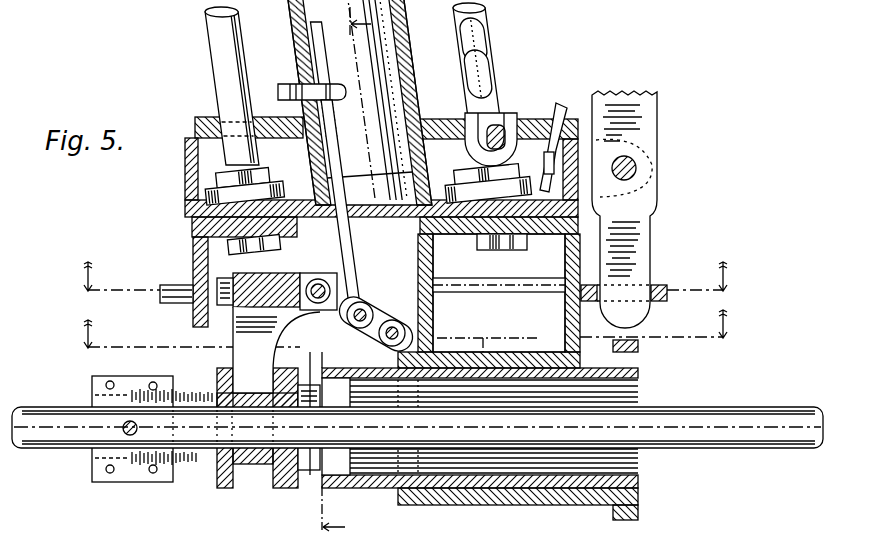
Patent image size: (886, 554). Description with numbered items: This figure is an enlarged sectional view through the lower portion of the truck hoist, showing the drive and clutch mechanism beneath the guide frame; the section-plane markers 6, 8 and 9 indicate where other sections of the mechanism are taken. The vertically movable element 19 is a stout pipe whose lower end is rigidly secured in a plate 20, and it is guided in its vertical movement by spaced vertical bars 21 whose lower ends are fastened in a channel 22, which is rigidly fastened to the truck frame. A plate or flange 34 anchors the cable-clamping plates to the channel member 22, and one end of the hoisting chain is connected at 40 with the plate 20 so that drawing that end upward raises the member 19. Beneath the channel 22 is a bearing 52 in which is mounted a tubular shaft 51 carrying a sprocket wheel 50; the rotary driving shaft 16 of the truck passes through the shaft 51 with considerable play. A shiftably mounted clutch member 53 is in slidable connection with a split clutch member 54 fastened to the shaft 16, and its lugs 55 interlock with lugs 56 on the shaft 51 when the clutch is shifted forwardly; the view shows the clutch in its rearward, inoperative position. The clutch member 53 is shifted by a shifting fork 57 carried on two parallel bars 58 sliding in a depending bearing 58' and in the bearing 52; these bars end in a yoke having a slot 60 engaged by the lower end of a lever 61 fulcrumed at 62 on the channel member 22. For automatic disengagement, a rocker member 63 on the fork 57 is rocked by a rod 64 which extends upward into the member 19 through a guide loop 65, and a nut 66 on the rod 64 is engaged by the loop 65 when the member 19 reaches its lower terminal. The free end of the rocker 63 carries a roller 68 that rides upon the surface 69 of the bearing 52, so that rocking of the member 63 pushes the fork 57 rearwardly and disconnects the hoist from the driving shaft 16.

The rotary driving shaft 16 is at (712, 442).
The vertically movable element 19 is at (410, 54).
The plate 20 is at (440, 121).
The bars 21 is at (214, 58).
The channel 22 is at (190, 197).
The plate or flange 34 is at (495, 56).
The chain connection 40 is at (512, 122).
The sprocket wheel 50 is at (637, 352).
The tubular shaft 51 is at (505, 490).
The bearing 52 is at (430, 322).
The clutch member 53 is at (256, 465).
The split clutch member 54 is at (138, 482).
The lugs 55 is at (306, 386).
The lugs 56 is at (338, 384).
The shifting fork 57 is at (240, 326).
The bars 58 is at (499, 263).
The depending bearing 58' is at (166, 308).
The slot 60 is at (654, 284).
The lever 61 is at (646, 222).
The fulcrum 62 is at (637, 167).
The rocker member 63 is at (375, 301).
The rod 64 is at (334, 238).
The guide loop 65 is at (330, 84).
The nut 66 is at (340, 100).
The roller 68 is at (434, 343).
The surface 69 is at (432, 268).
The section line 6- 6 is at (342, 280).
The section line 8- 8 is at (395, 282).
The section line 9- 9 is at (395, 334).